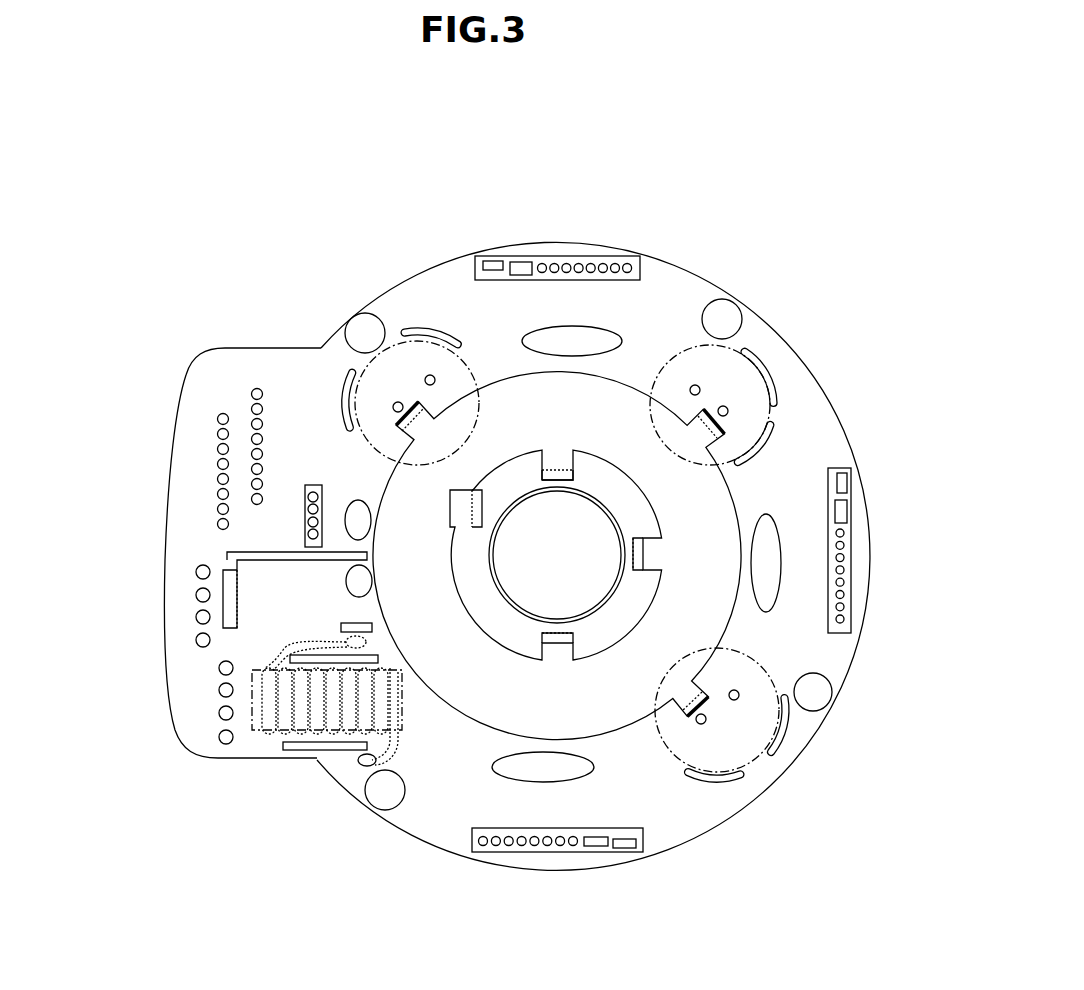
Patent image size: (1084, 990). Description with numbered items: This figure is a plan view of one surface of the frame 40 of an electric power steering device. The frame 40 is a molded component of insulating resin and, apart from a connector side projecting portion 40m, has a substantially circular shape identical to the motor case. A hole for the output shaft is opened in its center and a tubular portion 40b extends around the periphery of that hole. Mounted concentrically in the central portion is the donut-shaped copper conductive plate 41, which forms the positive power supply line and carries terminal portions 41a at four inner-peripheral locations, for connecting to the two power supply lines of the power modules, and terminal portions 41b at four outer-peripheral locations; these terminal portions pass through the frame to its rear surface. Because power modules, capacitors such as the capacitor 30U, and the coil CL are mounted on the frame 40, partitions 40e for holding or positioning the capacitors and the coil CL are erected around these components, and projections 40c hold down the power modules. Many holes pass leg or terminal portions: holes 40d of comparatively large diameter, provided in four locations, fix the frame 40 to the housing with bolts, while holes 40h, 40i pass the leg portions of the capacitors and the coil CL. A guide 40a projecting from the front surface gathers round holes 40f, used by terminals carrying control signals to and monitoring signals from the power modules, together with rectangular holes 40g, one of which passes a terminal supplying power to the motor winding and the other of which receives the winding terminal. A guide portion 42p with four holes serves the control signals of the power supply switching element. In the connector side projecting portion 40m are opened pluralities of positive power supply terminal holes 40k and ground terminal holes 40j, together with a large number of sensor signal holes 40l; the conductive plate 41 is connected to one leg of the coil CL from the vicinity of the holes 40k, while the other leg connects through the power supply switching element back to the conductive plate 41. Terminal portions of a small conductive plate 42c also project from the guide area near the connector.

The frame 40 is at (717, 273).
The guide 40a is at (580, 260).
The tubular portion 40b is at (535, 490).
The projection 40c is at (777, 602).
The hole 40d is at (360, 318).
The partition 40e is at (717, 783).
The round hole 40f is at (617, 263).
The rectangular hole 40g is at (518, 262).
The hole 40h is at (700, 377).
The hole 40i is at (363, 765).
The − power supply (ground) terminal hole 40j is at (200, 620).
The + power supply terminal hole 40k is at (223, 715).
The sensor signal hole 40l is at (220, 417).
The connector side projecting portion 40m is at (235, 358).
The conductive plate 41 is at (737, 483).
The terminal portion 41a is at (563, 648).
The terminal portion 41b is at (730, 428).
The small conductive plate 42c is at (233, 550).
The guide portion 42p is at (305, 520).
The capacitor 30U is at (753, 763).
The coil CL is at (277, 727).